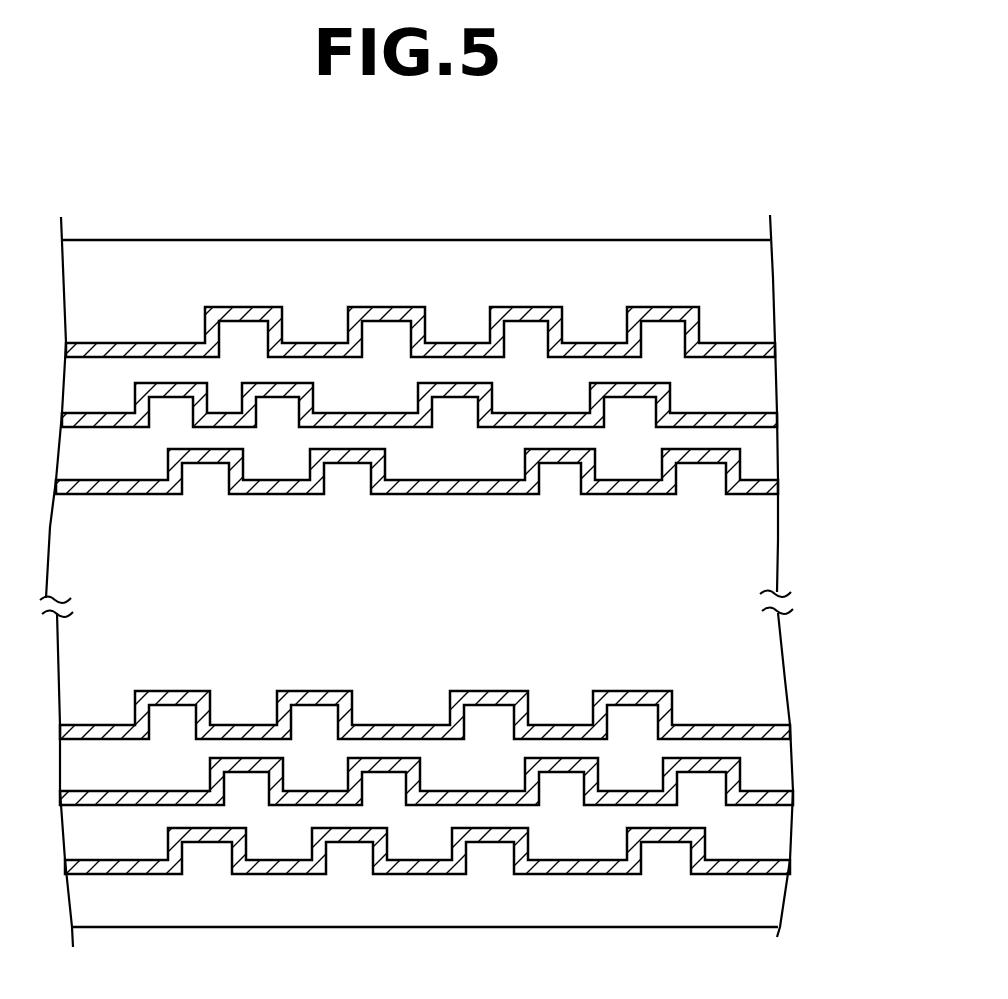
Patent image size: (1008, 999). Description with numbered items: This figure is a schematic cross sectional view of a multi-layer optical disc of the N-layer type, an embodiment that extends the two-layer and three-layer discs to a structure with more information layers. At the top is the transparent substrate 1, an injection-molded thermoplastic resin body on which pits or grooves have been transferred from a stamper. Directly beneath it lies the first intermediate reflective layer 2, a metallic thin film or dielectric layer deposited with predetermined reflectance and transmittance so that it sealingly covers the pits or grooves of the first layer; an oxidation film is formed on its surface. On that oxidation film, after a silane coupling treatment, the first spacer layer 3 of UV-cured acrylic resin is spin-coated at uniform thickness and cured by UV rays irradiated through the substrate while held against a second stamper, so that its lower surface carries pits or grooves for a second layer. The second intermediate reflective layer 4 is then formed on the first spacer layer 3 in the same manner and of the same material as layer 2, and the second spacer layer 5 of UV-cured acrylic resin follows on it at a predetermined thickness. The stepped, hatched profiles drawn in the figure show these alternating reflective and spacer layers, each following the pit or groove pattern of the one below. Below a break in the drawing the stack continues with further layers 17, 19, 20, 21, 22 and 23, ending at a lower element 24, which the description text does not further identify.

The transparent substrate 1 is at (759, 279).
The first intermediate reflective layer 2 is at (768, 338).
The first spacer layer 3 is at (764, 375).
The second intermediate reflective layer 4 is at (762, 410).
The second spacer layer 5 is at (770, 455).
The third conductor layer 17 is at (750, 490).
The fourth conductor layer 19 is at (767, 720).
The third insulating layer 20 is at (782, 758).
The fifth conductor layer 21 is at (780, 790).
The fourth insulating layer 22 is at (780, 832).
The sixth conductor layer 23 is at (770, 870).
The base substrate 24 is at (762, 900).